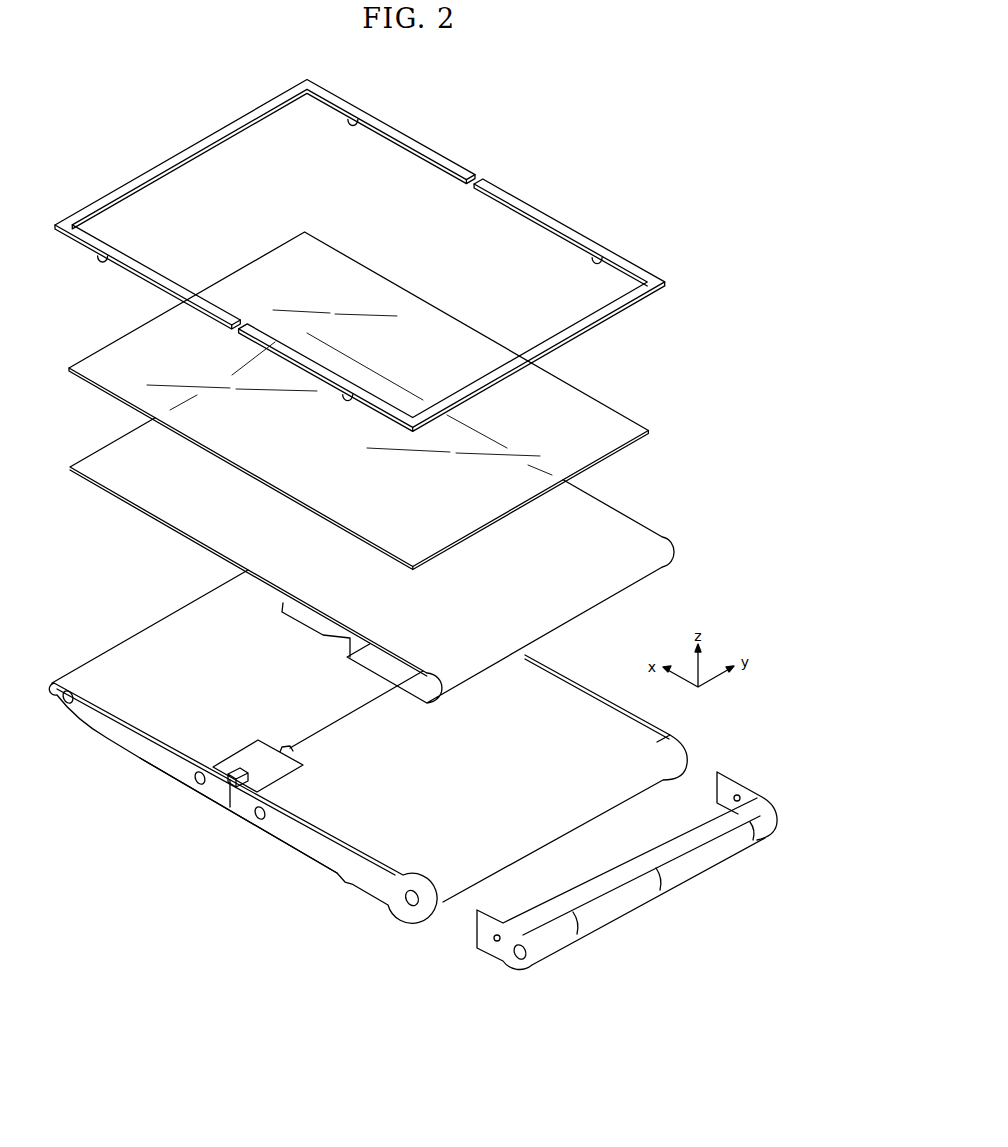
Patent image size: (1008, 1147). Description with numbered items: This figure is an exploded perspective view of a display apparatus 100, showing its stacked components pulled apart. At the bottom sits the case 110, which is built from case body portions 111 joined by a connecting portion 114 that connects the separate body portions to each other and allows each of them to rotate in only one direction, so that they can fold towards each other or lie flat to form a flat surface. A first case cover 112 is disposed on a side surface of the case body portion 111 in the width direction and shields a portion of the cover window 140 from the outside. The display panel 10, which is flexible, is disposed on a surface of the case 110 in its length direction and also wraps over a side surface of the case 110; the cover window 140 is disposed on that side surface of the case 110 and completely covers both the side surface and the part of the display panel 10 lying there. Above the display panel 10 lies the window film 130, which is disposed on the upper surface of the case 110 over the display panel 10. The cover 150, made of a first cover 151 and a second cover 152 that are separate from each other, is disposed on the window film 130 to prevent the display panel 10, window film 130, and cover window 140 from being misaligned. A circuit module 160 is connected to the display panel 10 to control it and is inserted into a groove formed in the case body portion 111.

The display apparatus 100 is at (675, 134).
The cover 150 is at (360, 256).
The first cover 151 is at (450, 162).
The second cover 152 is at (452, 293).
The window film 130 is at (594, 391).
The display panel 10 is at (637, 516).
The circuit module 160 is at (285, 605).
The case 110 is at (243, 803).
The case body portion 111 is at (207, 746).
The first case cover 112 is at (238, 823).
The connecting portion 114 is at (255, 763).
The cover window 140 is at (657, 902).